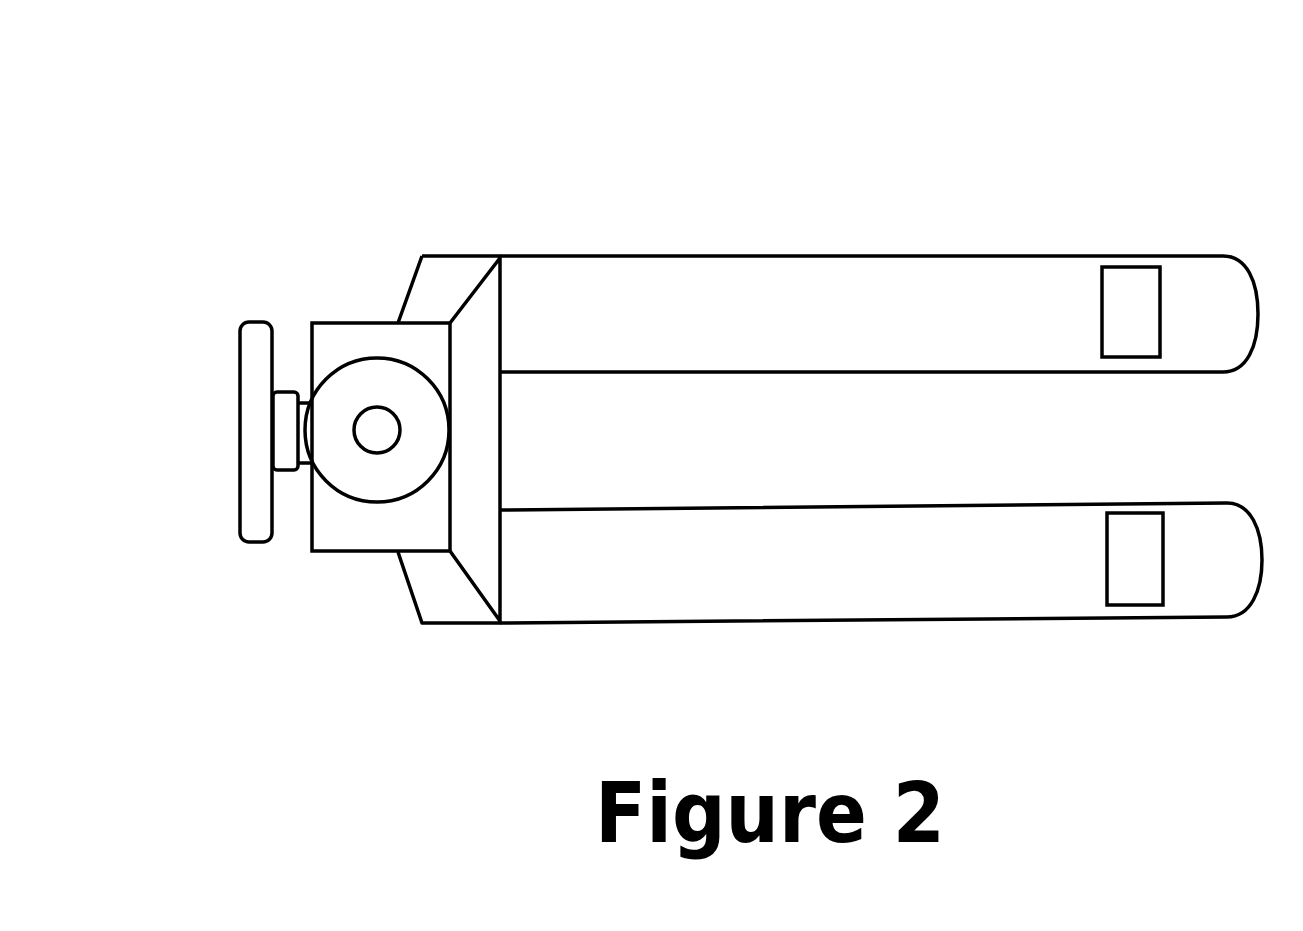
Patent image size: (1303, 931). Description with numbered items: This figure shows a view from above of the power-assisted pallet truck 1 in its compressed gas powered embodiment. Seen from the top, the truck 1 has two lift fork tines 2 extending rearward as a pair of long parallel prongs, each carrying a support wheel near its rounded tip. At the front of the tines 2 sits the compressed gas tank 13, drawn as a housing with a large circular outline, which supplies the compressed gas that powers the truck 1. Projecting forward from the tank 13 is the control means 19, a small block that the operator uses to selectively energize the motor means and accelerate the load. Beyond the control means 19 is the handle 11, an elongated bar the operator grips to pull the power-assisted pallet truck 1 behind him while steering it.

The pallet truck 1 is at (1082, 80).
The lift fork tines 2 is at (862, 320).
The handle 11 is at (257, 325).
The compressed gas tank 13 is at (337, 323).
The control means 19 is at (287, 462).